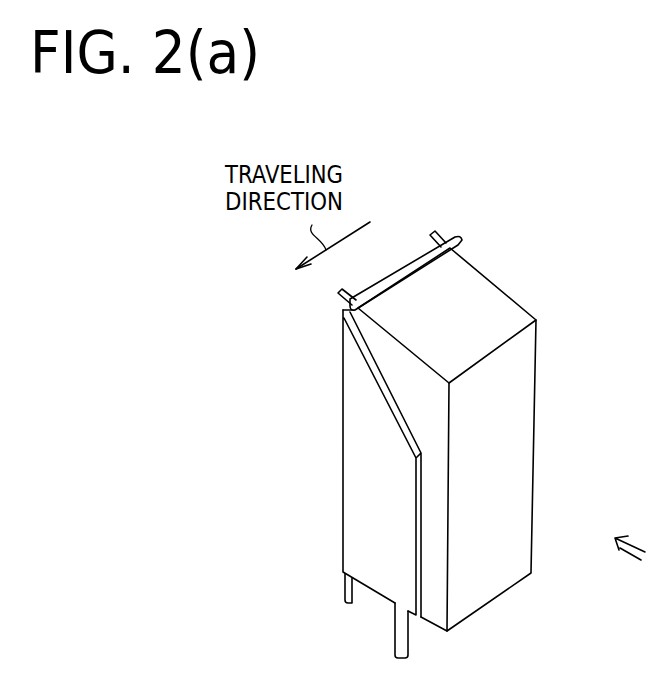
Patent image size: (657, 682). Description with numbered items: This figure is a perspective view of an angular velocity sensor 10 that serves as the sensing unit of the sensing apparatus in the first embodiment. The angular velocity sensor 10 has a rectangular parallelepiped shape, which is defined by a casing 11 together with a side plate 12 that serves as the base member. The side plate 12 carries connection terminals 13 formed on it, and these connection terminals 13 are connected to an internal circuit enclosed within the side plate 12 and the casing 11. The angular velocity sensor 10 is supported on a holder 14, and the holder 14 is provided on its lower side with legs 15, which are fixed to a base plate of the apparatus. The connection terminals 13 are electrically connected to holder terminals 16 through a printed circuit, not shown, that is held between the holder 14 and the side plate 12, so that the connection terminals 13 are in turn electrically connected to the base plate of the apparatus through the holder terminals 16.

The angular velocity sensor 10 is at (479, 410).
The casing 11 is at (536, 367).
The side plate 12 is at (416, 254).
The connection terminals 13 is at (340, 292).
The holder 14 is at (360, 447).
The legs 15 is at (409, 647).
The holder terminals 16 is at (352, 605).